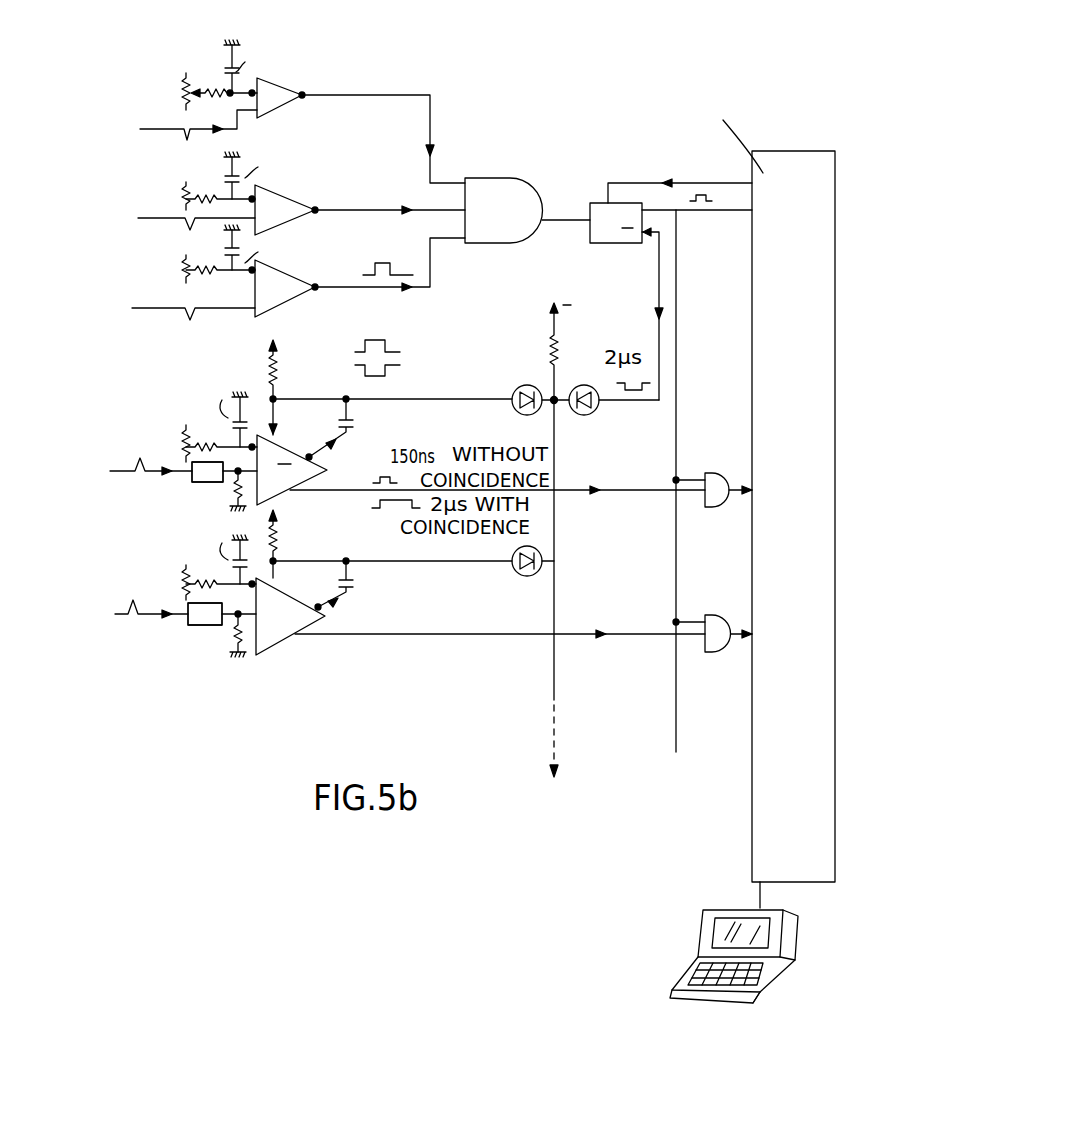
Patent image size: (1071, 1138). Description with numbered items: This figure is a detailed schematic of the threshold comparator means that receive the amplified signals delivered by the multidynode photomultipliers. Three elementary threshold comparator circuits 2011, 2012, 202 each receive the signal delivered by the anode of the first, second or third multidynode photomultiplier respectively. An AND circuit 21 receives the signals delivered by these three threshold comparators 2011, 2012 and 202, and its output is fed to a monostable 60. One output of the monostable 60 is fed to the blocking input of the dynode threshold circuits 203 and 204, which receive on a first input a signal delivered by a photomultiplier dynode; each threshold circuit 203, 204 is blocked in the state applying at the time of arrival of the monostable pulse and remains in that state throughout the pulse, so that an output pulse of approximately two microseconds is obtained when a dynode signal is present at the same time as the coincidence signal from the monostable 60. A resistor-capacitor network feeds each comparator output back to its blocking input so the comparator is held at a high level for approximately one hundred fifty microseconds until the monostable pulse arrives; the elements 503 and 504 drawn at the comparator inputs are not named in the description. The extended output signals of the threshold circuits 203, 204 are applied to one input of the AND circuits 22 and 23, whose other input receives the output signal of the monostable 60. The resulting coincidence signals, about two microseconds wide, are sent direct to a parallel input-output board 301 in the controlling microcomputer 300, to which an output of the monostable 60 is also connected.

The elementary threshold comparator circuit 2012 is at (278, 83).
The elementary threshold comparator circuit 2011 is at (283, 195).
The elementary threshold comparator circuit 202 is at (282, 272).
The AND circuit 21 is at (498, 178).
The monostable 60 is at (598, 203).
The parallel input-output board 301 is at (780, 151).
The threshold circuit 203 is at (328, 464).
The sample-and-hold ES 503 is at (194, 483).
The threshold circuit 204 is at (344, 623).
The sample-and-hold ES 504 is at (195, 626).
The AND circuit 22 is at (717, 473).
The AND circuit 23 is at (716, 615).
The controlling microcomputer 300 is at (672, 1003).